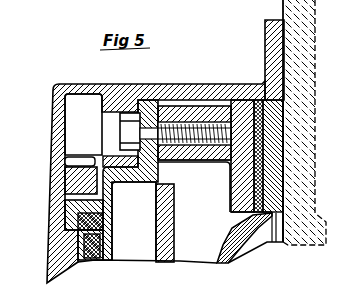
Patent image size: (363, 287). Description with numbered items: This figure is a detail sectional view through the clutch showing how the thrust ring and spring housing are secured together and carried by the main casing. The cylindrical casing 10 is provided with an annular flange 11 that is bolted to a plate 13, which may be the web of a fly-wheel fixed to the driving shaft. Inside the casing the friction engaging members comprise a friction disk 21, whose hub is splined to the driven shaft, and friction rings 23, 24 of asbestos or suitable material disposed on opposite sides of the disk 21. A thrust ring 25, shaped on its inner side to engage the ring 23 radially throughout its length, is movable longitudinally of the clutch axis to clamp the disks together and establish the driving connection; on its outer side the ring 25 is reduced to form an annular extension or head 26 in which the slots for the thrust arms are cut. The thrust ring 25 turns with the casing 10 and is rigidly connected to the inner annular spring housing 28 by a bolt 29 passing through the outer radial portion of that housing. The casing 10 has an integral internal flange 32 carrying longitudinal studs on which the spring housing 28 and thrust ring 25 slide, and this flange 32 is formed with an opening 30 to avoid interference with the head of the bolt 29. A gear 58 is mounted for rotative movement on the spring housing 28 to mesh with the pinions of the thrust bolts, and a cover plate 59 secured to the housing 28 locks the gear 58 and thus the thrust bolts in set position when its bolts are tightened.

The casing 10 is at (88, 75).
The annular flange 11 is at (265, 37).
The plate 13 is at (318, 140).
The friction disk 21 is at (283, 125).
The friction ring 23 is at (284, 197).
The friction ring 24 is at (284, 184).
The thrust ring 25 is at (243, 202).
The annular extension or head 26 is at (202, 156).
The spring housing 28 is at (171, 211).
The bolt 29 is at (196, 105).
The opening 30 is at (112, 127).
The internal flange 32 is at (150, 99).
The gear 58 is at (65, 177).
The cover plate 59 is at (63, 202).